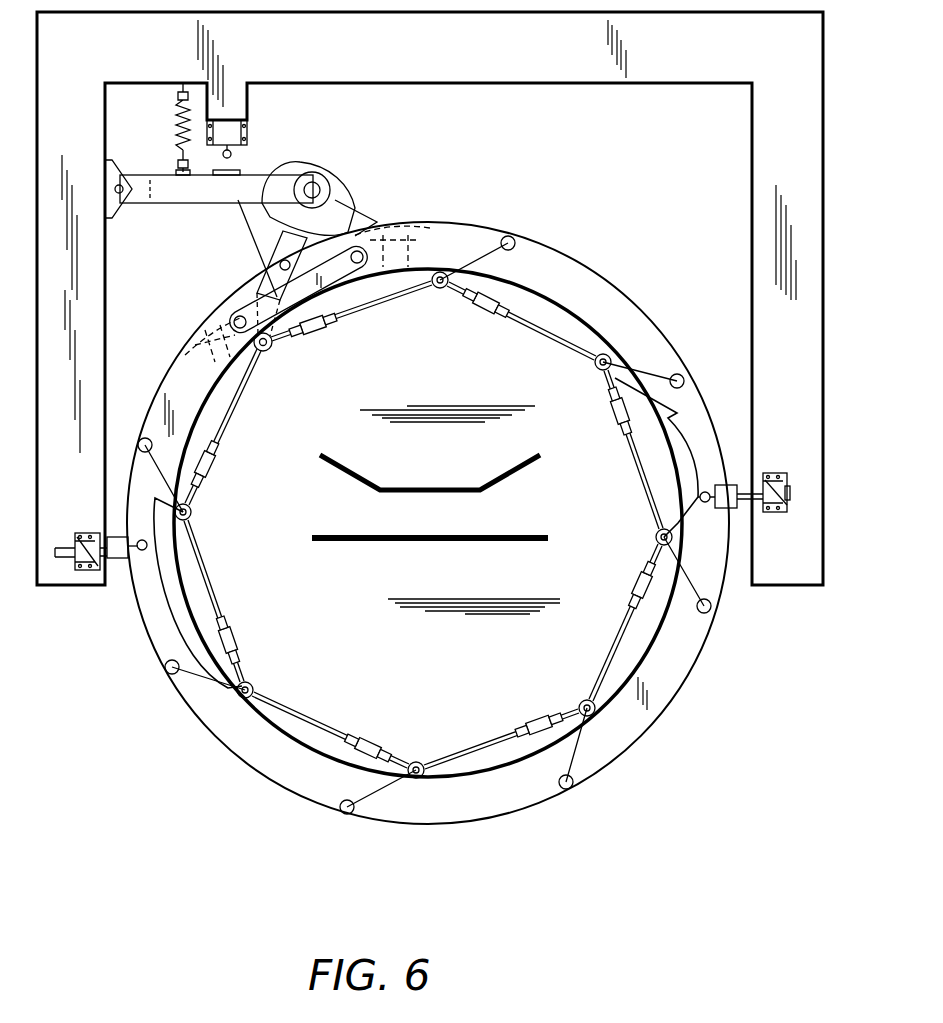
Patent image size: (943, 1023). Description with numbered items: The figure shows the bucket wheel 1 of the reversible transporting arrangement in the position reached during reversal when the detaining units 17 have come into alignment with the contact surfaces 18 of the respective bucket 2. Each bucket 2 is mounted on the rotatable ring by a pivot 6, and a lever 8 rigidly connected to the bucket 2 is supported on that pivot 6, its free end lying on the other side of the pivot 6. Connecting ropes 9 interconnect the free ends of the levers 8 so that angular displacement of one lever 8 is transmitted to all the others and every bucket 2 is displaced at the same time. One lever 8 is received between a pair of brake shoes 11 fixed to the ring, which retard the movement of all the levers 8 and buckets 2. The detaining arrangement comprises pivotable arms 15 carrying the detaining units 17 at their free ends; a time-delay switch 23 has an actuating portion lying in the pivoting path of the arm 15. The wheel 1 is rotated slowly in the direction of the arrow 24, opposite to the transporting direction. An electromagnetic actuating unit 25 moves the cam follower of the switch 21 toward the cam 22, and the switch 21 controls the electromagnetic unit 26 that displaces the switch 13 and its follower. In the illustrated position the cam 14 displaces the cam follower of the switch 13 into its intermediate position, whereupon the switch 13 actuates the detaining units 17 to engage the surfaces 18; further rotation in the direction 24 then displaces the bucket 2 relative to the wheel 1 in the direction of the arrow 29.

The bucket wheel 1 is at (222, 757).
The bucket 2 is at (330, 210).
The pivot 6 is at (262, 275).
The lever 8 is at (272, 348).
The connecting rope 9 is at (230, 413).
The brake shoe 11 is at (347, 283).
The switch 13 is at (728, 485).
The cam 14 is at (678, 432).
The arm 15 is at (202, 195).
The detaining unit 17 is at (252, 205).
The contact surface 18 is at (322, 192).
The switch 21 is at (120, 562).
The cam 22 is at (178, 618).
The time-delay switch 23 is at (229, 130).
The arrow 24 is at (498, 198).
The electromagnetic actuating unit 25 is at (90, 570).
The electromagnetic unit 26 is at (790, 490).
The arrow 29 is at (350, 152).